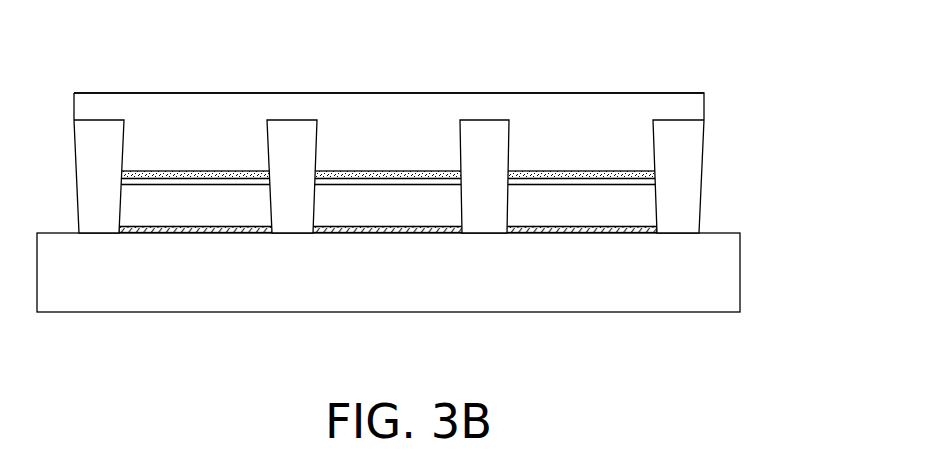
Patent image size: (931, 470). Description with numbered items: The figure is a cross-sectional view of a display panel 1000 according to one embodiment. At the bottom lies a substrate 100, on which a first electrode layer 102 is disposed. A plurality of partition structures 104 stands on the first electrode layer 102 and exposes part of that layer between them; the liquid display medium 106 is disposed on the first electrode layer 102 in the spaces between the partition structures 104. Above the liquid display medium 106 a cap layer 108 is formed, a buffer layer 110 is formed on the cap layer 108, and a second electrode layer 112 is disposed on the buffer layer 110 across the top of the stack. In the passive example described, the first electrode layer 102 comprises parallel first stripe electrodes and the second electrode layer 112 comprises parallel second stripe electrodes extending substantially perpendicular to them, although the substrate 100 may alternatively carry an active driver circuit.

The substrate 100 is at (714, 291).
The first electrode layer 102 is at (658, 230).
The partition structures 104 is at (680, 147).
The liquid display medium 106 is at (643, 210).
The cap layer 108 is at (655, 183).
The buffer layer 110 is at (621, 177).
The second electrode layer 112 is at (562, 138).
The display panel 1000 is at (425, 201).